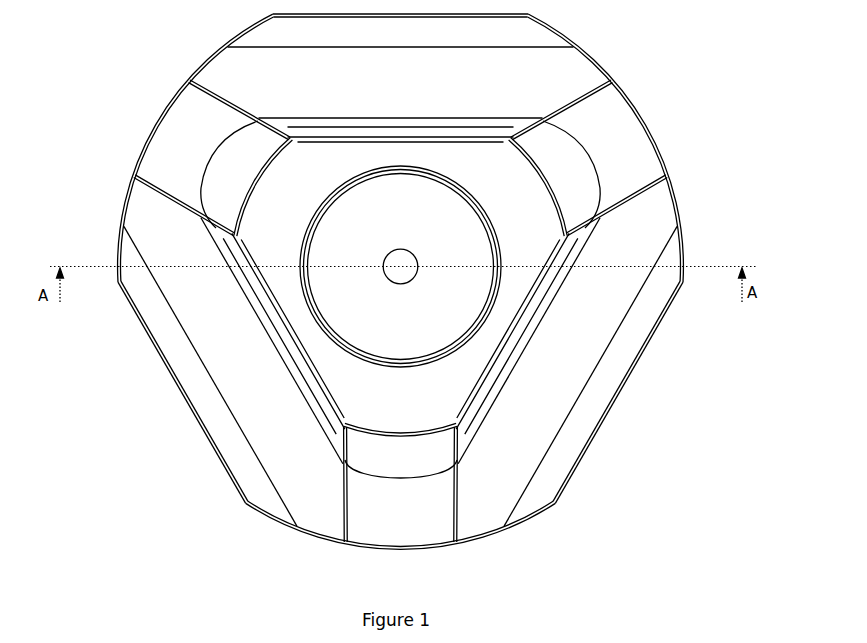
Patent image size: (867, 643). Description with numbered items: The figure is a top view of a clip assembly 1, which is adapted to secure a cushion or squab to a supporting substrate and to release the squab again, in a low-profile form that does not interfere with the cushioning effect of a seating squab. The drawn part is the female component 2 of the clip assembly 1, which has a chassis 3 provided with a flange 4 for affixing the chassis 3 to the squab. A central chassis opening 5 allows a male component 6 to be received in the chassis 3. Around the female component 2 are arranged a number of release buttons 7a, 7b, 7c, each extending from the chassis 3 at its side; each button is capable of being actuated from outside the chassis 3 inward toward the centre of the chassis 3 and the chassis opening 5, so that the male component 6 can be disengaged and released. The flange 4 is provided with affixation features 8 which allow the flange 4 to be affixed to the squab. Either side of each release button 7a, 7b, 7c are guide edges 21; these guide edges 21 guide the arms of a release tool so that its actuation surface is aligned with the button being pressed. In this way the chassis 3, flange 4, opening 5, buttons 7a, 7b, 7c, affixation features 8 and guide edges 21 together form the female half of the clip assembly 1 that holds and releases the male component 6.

The clip assembly 1 is at (657, 85).
The female component 2 is at (522, 198).
The chassis 3 is at (537, 247).
The flange 4 is at (572, 305).
The chassis opening 5 is at (471, 294).
The male component 6 is at (443, 323).
The release button 7a is at (572, 210).
The release button 7b is at (423, 457).
The release button 7c is at (230, 183).
The affixation features 8 is at (470, 414).
The guide edges 21 is at (480, 420).